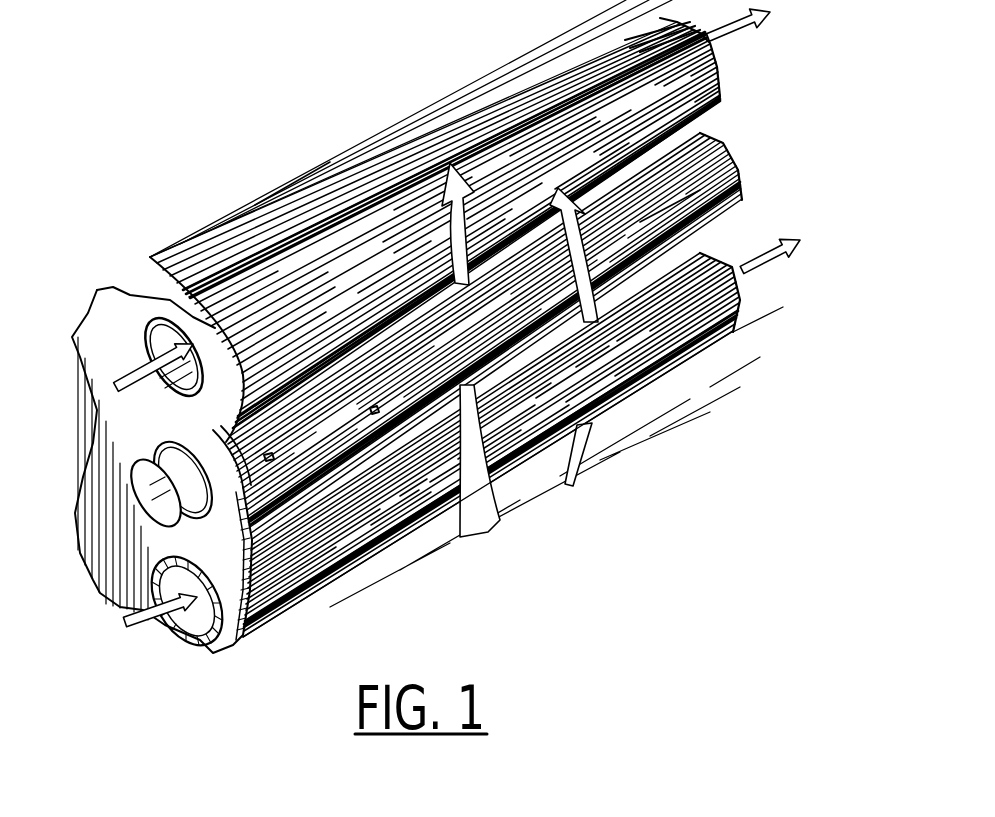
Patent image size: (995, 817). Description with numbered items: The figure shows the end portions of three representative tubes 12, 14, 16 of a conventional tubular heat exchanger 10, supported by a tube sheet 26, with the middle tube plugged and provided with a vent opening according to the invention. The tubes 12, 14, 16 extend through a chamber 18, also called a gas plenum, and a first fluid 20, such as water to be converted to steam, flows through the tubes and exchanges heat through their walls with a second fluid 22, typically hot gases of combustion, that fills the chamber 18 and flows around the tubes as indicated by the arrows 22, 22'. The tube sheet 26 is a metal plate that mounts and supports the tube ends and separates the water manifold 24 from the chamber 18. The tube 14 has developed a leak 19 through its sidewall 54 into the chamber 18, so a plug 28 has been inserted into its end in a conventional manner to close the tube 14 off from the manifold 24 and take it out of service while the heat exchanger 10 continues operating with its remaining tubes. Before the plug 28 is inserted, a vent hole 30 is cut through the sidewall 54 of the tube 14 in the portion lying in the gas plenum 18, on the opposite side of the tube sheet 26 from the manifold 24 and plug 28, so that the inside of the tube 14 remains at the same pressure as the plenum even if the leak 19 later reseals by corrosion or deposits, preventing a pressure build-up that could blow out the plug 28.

The tubular heat exchanger 10 is at (203, 222).
The tube 12 is at (568, 83).
The tube 14 is at (738, 170).
The tube 16 is at (738, 326).
The chamber 18 is at (391, 179).
The leak 19 is at (373, 410).
The first fluid 20 is at (748, 40).
The second fluid 22 is at (274, 183).
The tube seam line 22' is at (706, 204).
The water manifold 24 is at (84, 554).
The tube sheet 26 is at (243, 640).
The plug 28 is at (135, 470).
The vent hole 30 is at (198, 298).
The sidewall 54 is at (270, 457).